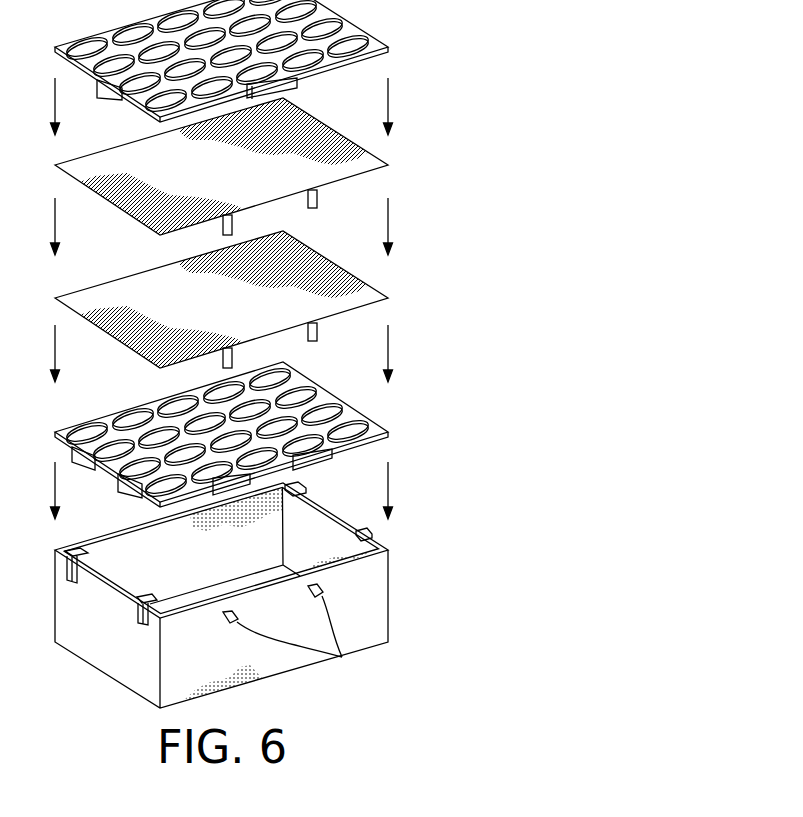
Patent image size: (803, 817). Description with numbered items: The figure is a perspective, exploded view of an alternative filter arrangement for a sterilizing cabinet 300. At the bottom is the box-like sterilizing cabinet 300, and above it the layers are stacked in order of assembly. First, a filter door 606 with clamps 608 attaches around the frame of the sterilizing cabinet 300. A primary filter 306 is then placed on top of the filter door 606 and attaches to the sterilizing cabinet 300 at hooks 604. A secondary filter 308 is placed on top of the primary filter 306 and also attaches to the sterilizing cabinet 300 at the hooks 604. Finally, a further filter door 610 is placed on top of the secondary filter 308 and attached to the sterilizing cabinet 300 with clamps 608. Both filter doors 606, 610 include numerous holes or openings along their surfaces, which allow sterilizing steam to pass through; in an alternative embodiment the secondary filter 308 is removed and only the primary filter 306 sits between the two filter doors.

The filter door 610 is at (343, 18).
The clamps 608 is at (110, 90).
The secondary filter 308 is at (358, 166).
The primary filter 306 is at (360, 293).
The filter door 606 is at (376, 423).
The sterilizing cabinet 300 is at (373, 604).
The hooks 604 is at (342, 657).